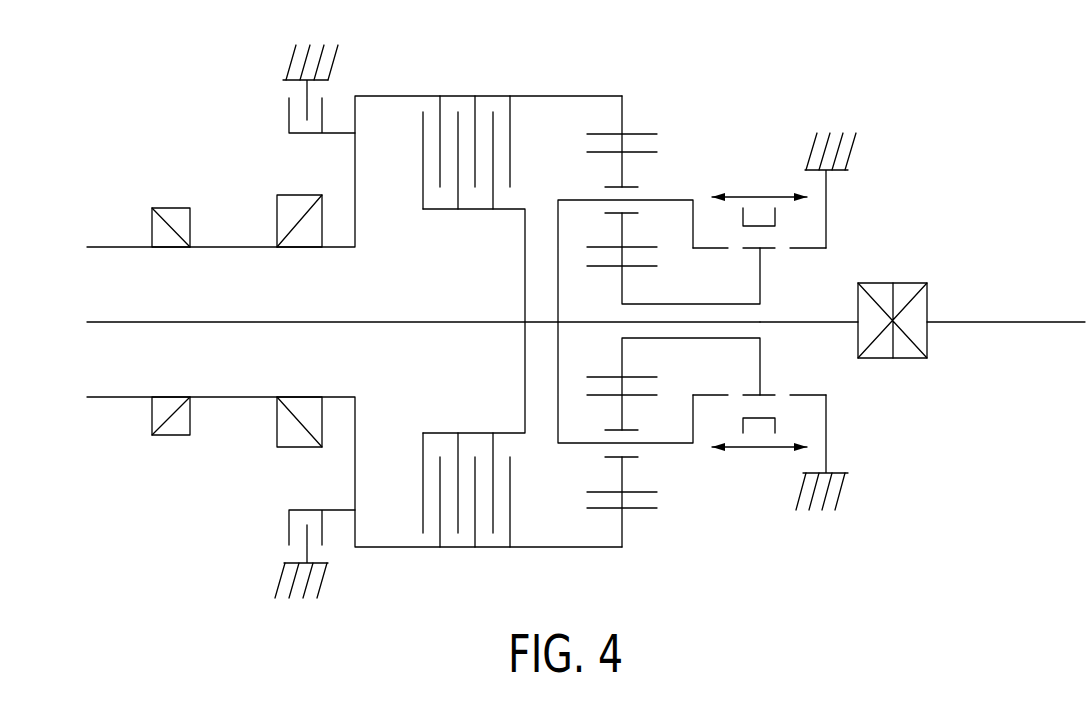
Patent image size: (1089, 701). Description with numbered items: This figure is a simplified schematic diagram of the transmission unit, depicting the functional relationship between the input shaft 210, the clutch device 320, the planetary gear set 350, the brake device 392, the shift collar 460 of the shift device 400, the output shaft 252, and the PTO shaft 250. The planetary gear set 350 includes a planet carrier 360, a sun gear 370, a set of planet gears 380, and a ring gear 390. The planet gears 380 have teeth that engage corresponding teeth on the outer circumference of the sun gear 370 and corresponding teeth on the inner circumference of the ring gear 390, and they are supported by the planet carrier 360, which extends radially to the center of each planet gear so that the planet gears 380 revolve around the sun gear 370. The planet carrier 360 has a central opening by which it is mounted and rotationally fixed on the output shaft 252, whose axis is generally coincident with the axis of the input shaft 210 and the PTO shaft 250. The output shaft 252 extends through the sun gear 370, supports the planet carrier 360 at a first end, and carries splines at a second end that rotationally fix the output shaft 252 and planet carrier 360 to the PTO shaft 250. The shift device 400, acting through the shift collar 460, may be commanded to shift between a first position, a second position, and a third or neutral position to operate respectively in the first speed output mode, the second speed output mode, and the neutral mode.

The input shaft 210 is at (200, 322).
The PTO shaft 250 is at (1042, 322).
The output shaft 252 is at (817, 322).
The clutch device 320 is at (416, 220).
The planetary gear set 350 is at (638, 79).
The planet carrier 360 is at (558, 355).
The sun gear 370 is at (658, 304).
The set of planet gears 380 is at (623, 170).
The ring gear 390 is at (555, 96).
The brake device 392 is at (270, 106).
The shift device 400 is at (754, 192).
The shift collar 460 is at (776, 216).